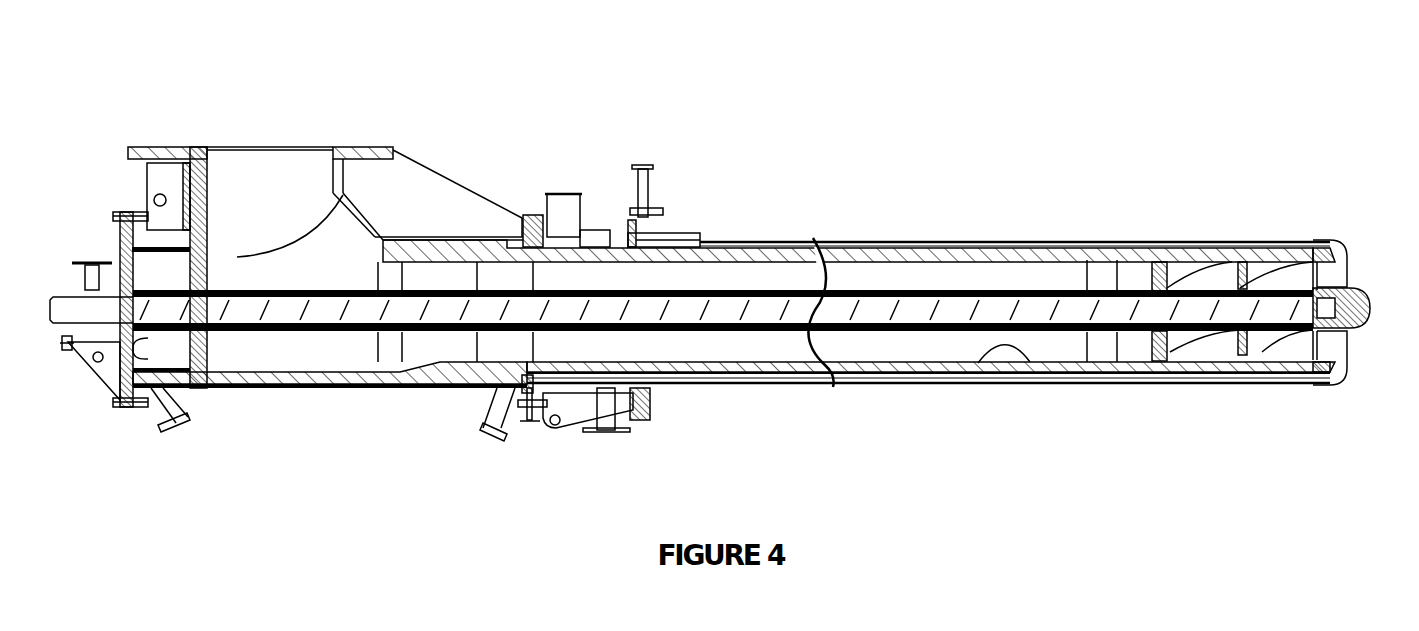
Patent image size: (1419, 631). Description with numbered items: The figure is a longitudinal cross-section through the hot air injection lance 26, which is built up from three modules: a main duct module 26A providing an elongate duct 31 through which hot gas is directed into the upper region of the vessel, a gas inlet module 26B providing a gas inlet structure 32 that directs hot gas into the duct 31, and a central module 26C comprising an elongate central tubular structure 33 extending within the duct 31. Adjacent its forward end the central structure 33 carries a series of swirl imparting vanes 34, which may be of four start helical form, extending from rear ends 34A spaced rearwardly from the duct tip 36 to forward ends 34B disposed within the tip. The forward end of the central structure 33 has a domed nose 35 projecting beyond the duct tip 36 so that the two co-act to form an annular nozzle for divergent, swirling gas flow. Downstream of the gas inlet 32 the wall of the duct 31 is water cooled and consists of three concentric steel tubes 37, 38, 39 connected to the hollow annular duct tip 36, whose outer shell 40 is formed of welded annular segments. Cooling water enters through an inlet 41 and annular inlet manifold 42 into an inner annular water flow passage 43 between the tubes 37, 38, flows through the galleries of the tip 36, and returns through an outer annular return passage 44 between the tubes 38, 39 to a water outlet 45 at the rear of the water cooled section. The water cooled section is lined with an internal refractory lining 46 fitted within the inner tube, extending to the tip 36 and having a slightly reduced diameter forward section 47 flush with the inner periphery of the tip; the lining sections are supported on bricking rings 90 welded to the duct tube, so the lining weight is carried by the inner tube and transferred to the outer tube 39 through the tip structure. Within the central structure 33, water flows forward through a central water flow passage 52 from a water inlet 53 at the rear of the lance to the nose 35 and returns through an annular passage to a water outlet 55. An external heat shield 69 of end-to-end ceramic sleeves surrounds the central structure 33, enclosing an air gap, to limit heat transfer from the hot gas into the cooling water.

The hot air injection lance 26 is at (777, 233).
The lance module (main duct module) 26A is at (920, 168).
The lance module (gas inlet module) 26B is at (398, 205).
The lance module (central module) 26C is at (346, 355).
The elongate duct 31 is at (713, 273).
The gas inlet structure 32 is at (297, 157).
The central tubular structure 33 is at (1033, 290).
The swirl imparting vanes 34 is at (1252, 261).
The rear ends of vanes 34A is at (1176, 358).
The forward ends of vanes 34B is at (1332, 277).
The domed nose 35 is at (1363, 277).
The duct tip 36 is at (1332, 237).
The innermost tube 37 is at (762, 374).
The intermediate tube 38 is at (792, 379).
The outer tube 39 is at (822, 384).
The outer shell of duct tip 40 is at (1331, 383).
The water inlet 41 is at (582, 200).
The annular inlet manifold 42 is at (573, 387).
The inner annular water flow passage 43 is at (730, 242).
The outer annular water return flow passage 44 is at (722, 380).
The water outlet 45 is at (607, 431).
The internal refractory lining 46 is at (672, 260).
The reduced diameter section 47 is at (1130, 384).
The central water flow passage 52 is at (257, 330).
The water inlet 53 is at (80, 348).
The water outlet 55 is at (88, 262).
The external heat shield 69 is at (323, 335).
The bricking rings 90 is at (700, 257).